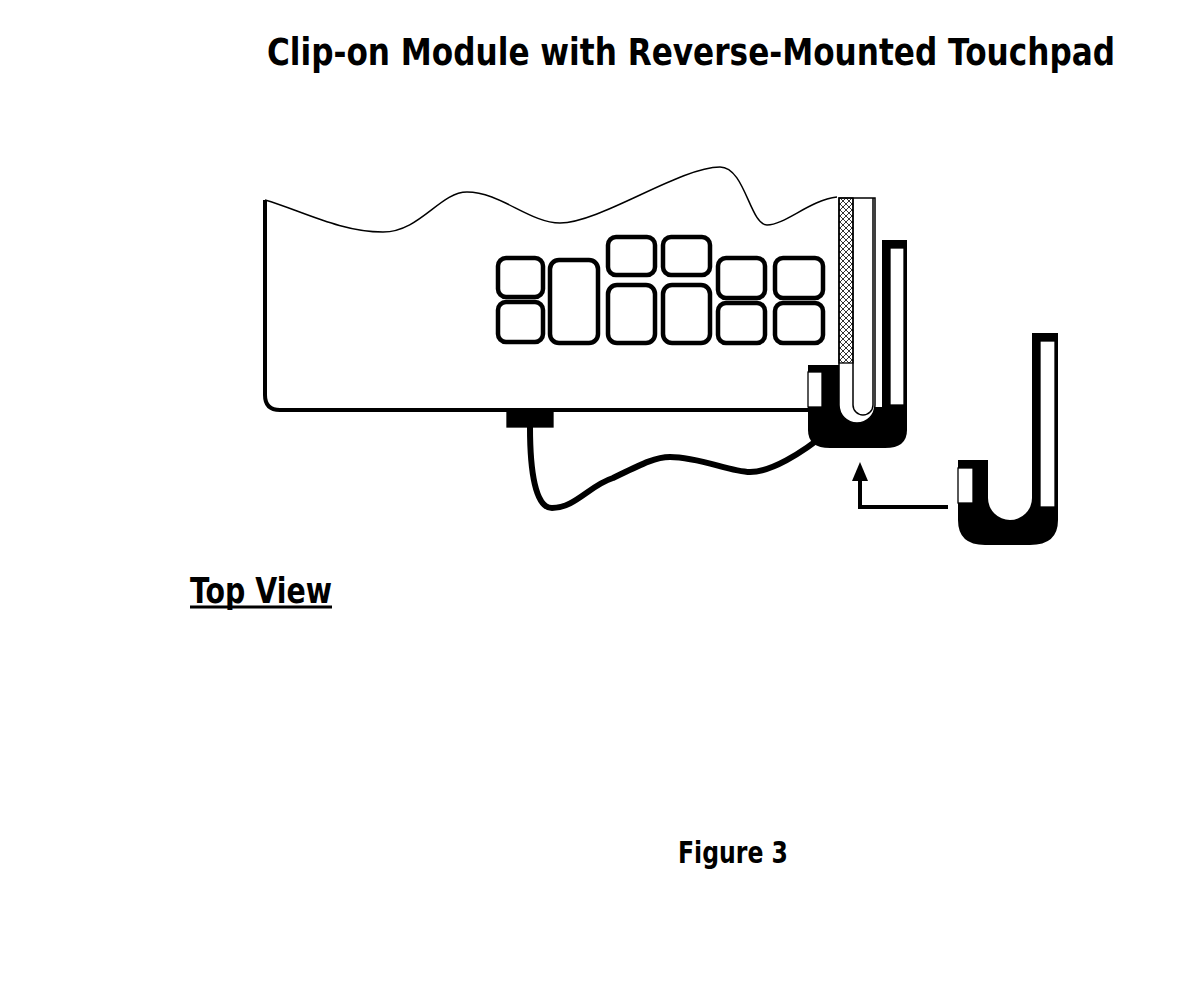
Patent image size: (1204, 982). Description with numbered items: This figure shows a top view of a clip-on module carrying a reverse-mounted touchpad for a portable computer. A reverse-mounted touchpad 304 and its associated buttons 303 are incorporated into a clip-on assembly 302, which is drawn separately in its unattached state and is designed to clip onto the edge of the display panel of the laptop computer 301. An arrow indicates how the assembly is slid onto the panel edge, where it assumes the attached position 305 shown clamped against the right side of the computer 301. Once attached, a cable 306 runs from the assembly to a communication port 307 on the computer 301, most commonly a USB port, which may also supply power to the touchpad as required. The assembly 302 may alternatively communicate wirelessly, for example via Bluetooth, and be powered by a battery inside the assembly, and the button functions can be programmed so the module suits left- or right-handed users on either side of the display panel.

The laptop computer 301 is at (253, 250).
The clip-on assembly 302 is at (1036, 556).
The associated buttons 303 is at (953, 483).
The reverse-mounted touchpad 304 is at (1060, 425).
The attached position 305 is at (830, 462).
The cable 306 is at (533, 503).
The communication port 307 is at (502, 430).